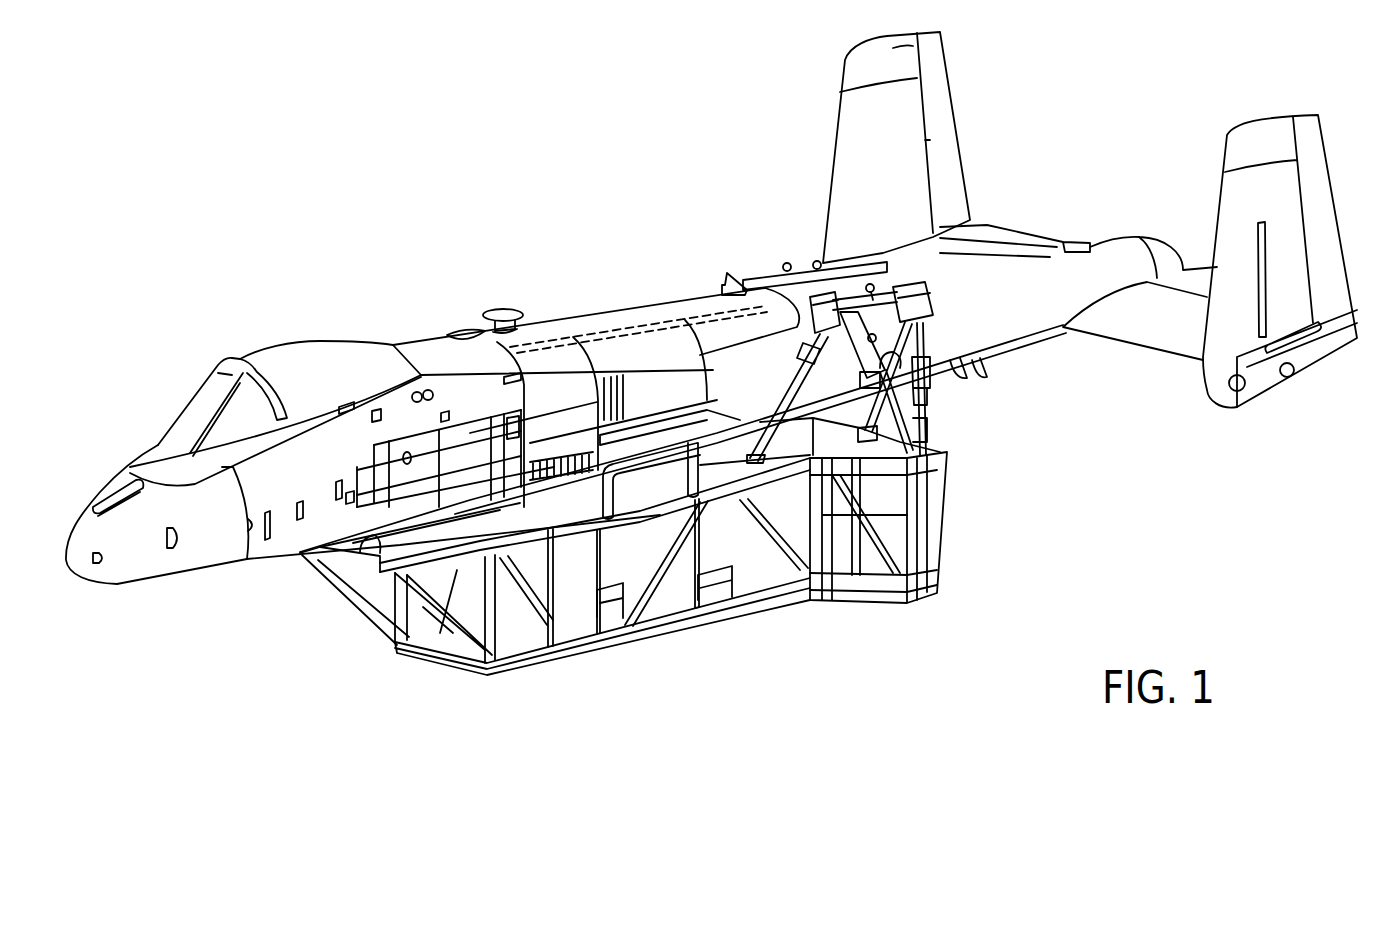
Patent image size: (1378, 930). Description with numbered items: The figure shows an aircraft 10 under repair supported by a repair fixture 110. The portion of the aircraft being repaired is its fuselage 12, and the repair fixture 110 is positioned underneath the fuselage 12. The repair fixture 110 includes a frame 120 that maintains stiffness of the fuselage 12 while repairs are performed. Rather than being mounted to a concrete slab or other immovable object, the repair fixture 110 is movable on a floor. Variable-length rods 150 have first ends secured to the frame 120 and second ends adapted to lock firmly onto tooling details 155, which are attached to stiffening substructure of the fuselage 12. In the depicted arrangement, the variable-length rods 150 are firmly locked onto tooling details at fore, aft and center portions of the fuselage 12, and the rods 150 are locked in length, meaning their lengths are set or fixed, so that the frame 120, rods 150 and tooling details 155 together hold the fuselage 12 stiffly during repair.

The aircraft 10 is at (711, 308).
The fuselage 12 is at (623, 313).
The repair fixture 110 is at (777, 607).
The frame 120 is at (937, 545).
The variable-length rods 150 is at (930, 383).
The tooling details 155 is at (790, 262).